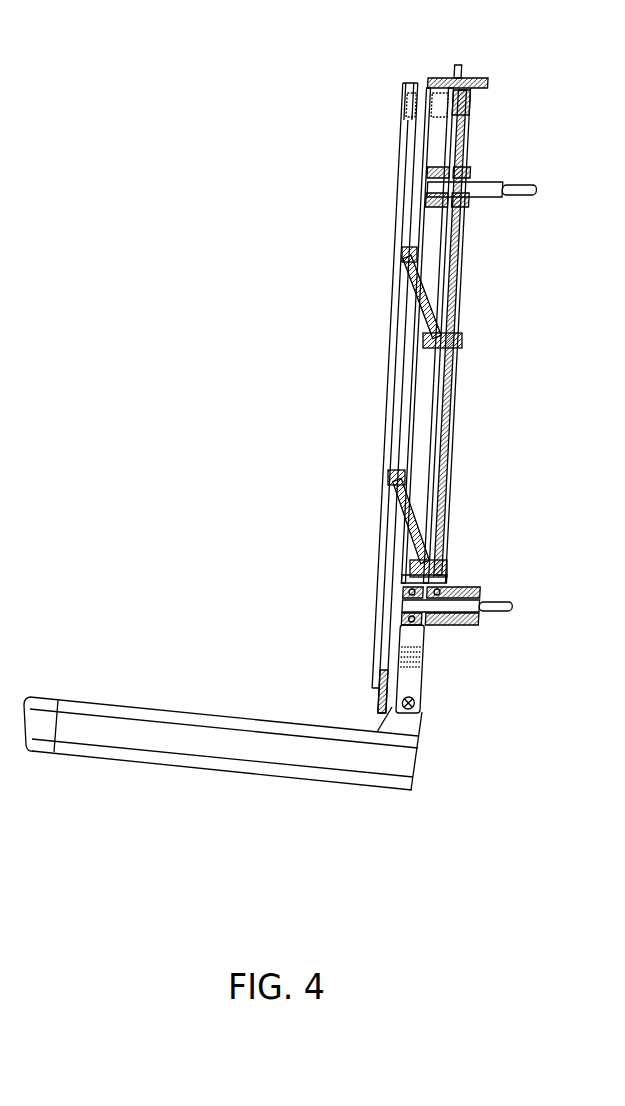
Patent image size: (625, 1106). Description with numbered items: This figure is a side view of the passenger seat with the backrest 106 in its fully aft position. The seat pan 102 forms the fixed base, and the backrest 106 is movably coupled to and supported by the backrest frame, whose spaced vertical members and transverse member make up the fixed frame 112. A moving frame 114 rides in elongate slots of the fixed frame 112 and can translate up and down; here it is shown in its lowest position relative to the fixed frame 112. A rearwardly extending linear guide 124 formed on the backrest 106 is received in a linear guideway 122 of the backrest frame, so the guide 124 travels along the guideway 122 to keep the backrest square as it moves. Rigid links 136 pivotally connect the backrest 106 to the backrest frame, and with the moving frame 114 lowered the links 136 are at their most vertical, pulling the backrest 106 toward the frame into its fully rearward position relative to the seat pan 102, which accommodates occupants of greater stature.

The seat pan 102 is at (143, 709).
The backrest 106 is at (407, 142).
The fixed frame assembly 112 is at (455, 263).
The moving frame 114 is at (440, 452).
The guideway 122 is at (488, 165).
The guide 124 is at (518, 185).
The link 136 is at (408, 267).